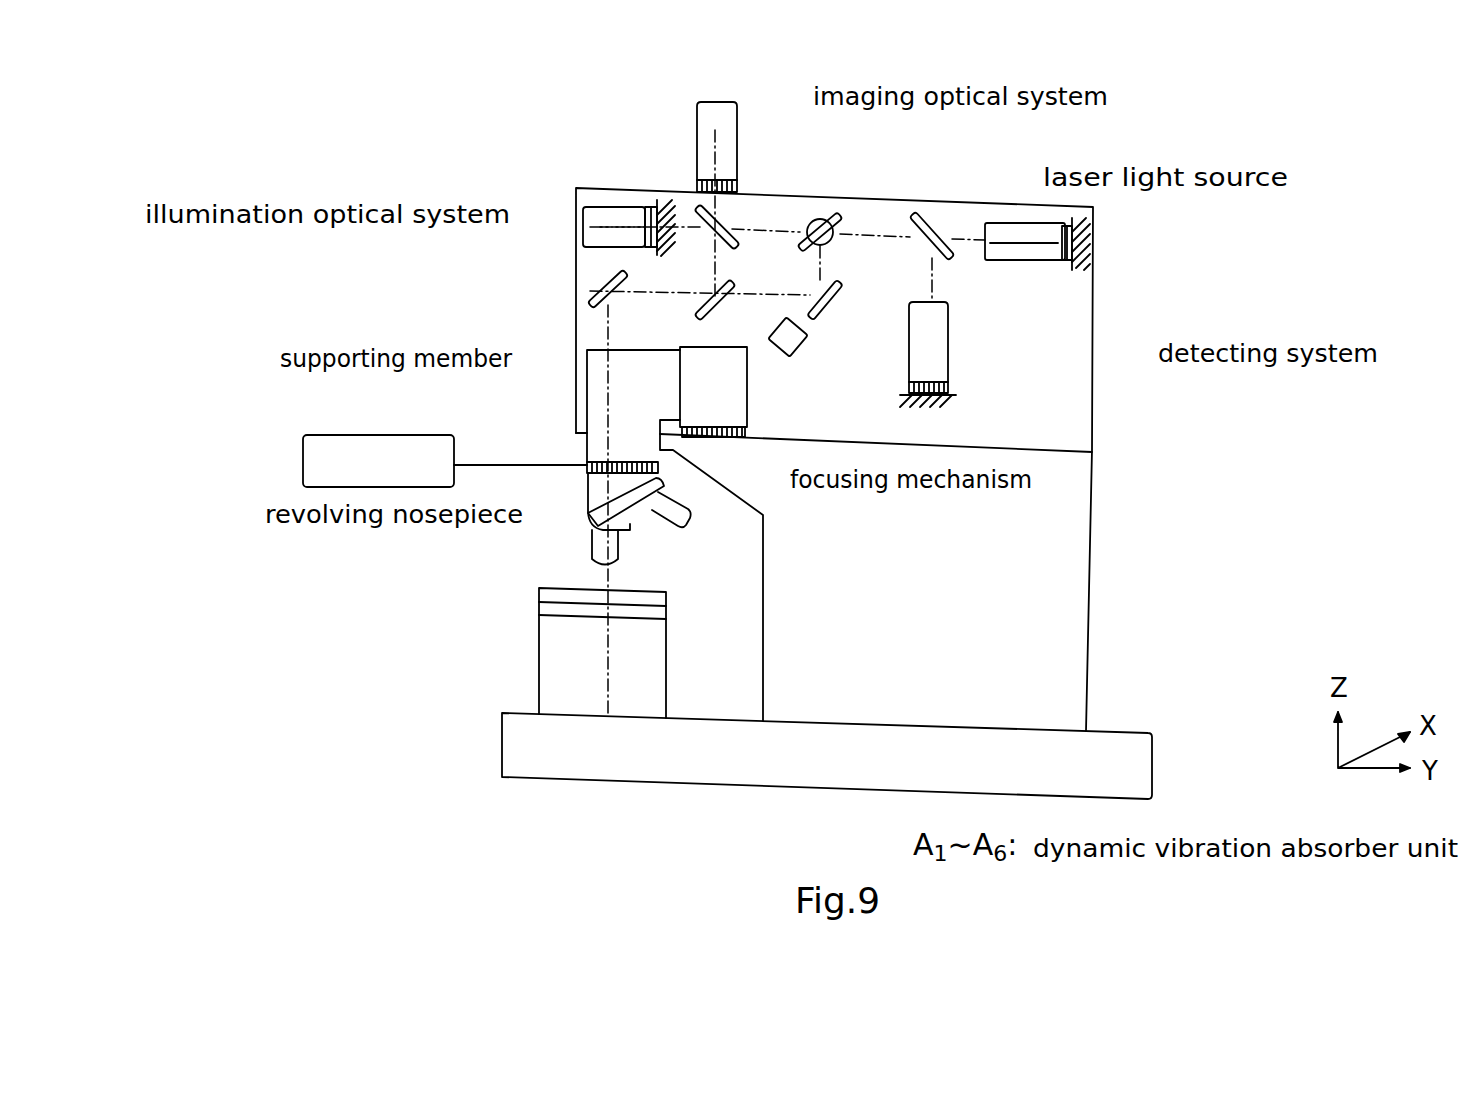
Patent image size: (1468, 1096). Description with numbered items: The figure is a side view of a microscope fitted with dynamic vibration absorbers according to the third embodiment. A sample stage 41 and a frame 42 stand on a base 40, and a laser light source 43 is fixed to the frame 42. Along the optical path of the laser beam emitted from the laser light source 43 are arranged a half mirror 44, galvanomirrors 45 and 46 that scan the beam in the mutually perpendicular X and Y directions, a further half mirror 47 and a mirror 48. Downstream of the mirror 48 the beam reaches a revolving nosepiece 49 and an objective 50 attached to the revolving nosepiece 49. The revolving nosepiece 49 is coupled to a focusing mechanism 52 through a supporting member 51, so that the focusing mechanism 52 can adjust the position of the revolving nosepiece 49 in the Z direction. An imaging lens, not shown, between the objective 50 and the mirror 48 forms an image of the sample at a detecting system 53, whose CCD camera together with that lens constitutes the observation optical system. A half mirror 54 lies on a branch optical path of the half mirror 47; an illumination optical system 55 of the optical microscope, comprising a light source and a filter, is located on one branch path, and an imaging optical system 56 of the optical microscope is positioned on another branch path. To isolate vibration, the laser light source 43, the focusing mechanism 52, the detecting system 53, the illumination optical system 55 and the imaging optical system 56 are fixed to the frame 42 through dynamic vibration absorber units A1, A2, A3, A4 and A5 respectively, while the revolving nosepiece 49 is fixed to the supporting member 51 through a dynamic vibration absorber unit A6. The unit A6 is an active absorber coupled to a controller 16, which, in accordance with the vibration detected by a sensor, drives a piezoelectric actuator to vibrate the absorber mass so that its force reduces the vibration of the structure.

The controller 16 is at (342, 435).
The base 40 is at (502, 738).
The sample stage 41 is at (539, 648).
The frame 42 is at (1086, 648).
The laser light source 43 is at (1018, 223).
The half mirror 44 is at (933, 215).
The galvanomirror 45 is at (822, 216).
The galvanomirror 46 is at (797, 349).
The half mirror 47 is at (698, 312).
The mirror 48 is at (576, 300).
The revolving nosepiece 49 is at (588, 500).
The objective 50 is at (592, 545).
The supporting member 51 is at (587, 370).
The focusing mechanism 52 is at (717, 415).
The detecting system 53 is at (948, 357).
The half mirror 54 is at (740, 213).
The illumination optical system 55 is at (576, 224).
The imaging optical system 56 is at (737, 123).
The dynamic vibration absorber unit A1 is at (1093, 248).
The dynamic vibration absorber unit A2 is at (747, 432).
The dynamic vibration absorber unit A3 is at (948, 388).
The dynamic vibration absorber unit A4 is at (647, 207).
The dynamic vibration absorber unit A5 is at (697, 183).
The dynamic vibration absorber unit A6 is at (587, 462).